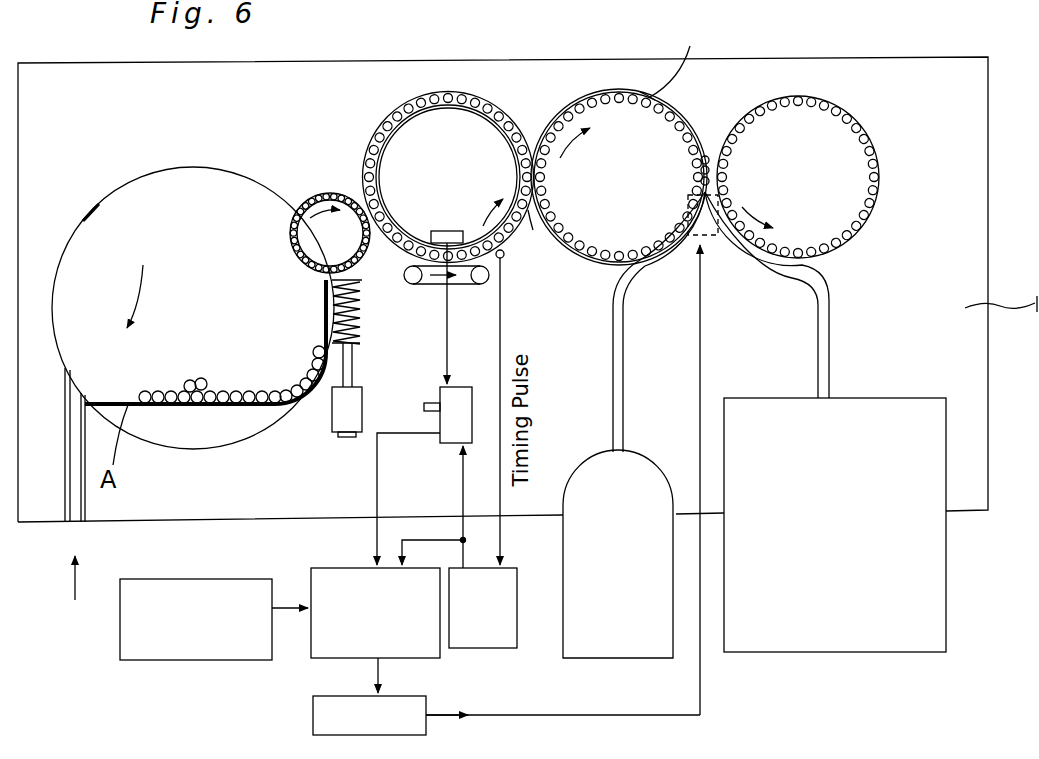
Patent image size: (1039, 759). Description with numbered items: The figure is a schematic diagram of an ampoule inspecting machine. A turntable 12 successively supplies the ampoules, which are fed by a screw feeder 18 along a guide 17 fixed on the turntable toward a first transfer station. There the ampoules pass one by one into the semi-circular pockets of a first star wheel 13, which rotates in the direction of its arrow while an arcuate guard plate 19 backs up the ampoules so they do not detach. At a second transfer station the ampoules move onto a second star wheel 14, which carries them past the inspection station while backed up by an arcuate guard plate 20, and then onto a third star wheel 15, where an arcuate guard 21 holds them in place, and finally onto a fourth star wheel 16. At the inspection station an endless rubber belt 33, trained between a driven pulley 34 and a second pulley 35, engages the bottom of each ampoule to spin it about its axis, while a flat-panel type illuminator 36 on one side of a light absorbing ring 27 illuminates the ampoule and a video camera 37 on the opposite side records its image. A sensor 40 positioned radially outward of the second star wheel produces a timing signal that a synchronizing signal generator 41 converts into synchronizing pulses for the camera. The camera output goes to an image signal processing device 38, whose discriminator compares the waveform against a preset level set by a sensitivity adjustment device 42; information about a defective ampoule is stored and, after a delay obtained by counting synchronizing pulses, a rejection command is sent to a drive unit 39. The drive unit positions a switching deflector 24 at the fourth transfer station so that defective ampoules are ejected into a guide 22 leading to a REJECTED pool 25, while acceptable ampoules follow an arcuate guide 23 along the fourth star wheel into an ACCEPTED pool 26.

The turntable 12 is at (122, 203).
The first star wheel 13 is at (307, 213).
The second star wheel 14 is at (430, 128).
The third star wheel 15 is at (600, 113).
The fourth star wheel 16 is at (810, 120).
The guide 17 is at (246, 400).
The screw feeder 18 is at (365, 335).
The arcuate guard plate 19 is at (338, 193).
The arcuate guard plate 20 is at (525, 228).
The arcuate guard 21 is at (673, 59).
The guide 22 is at (672, 252).
The arcuate guide 23 is at (733, 255).
The switching deflector 24 is at (688, 205).
The REJECTED pool 25 is at (632, 640).
The ACCEPTED pool 26 is at (843, 655).
The light absorbing ring 27 is at (385, 125).
The endless rubber belt 33 is at (430, 287).
The pulley 34 is at (402, 272).
The pulley 35 is at (488, 283).
The flat-panel type illuminator 36 is at (431, 232).
The video camera 37 is at (455, 432).
The image signal processing device 38 is at (311, 659).
The drive unit 39 is at (313, 720).
The sensor 40 is at (505, 257).
The synchronizing signal generator 41 is at (493, 649).
The sensitivity adjustment device 42 is at (175, 661).